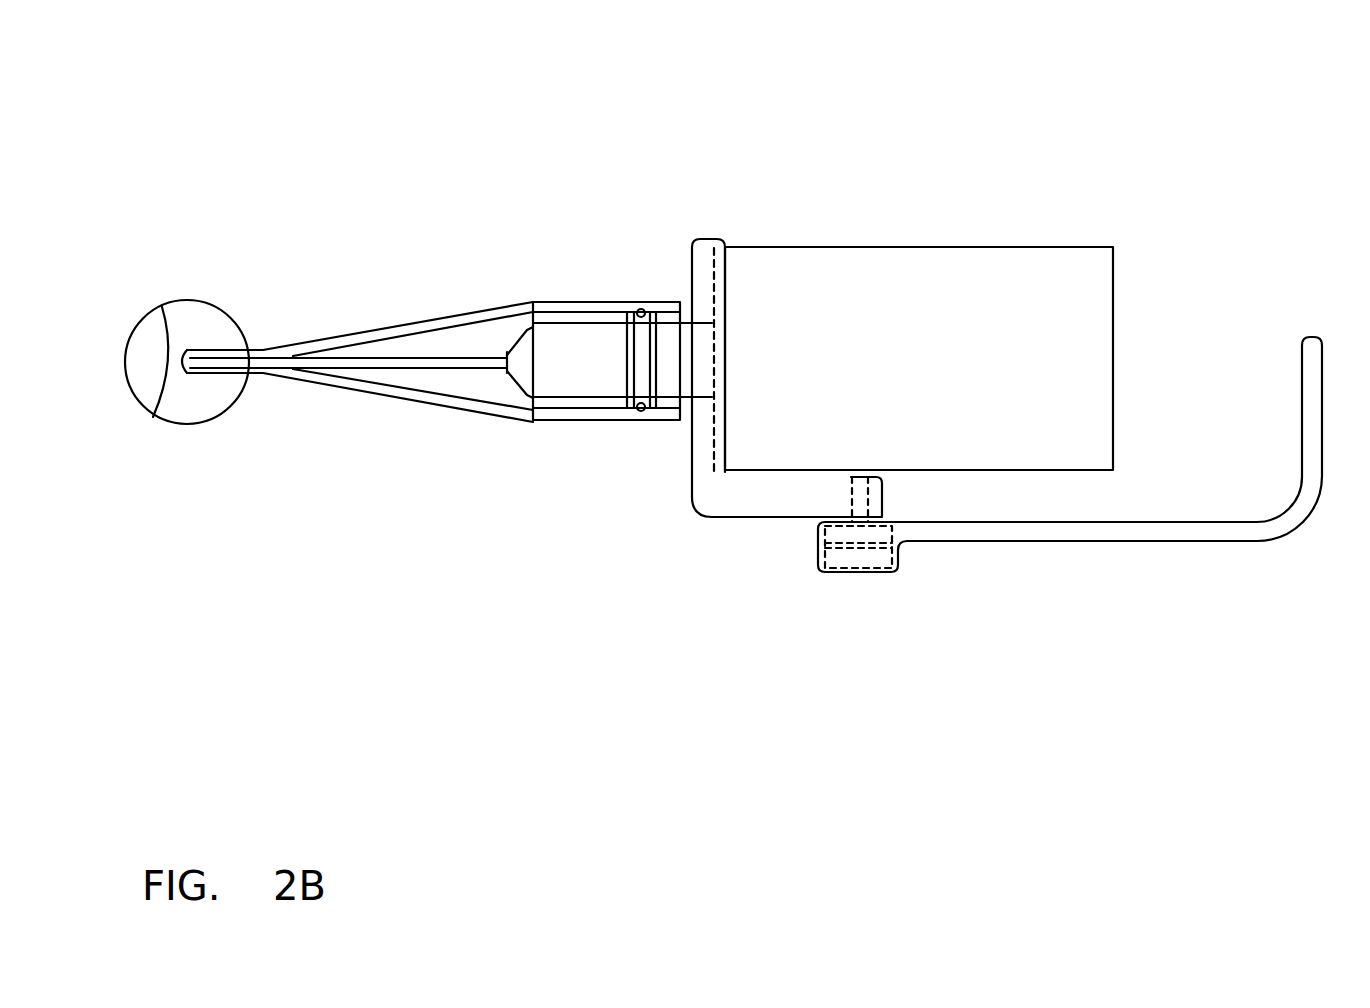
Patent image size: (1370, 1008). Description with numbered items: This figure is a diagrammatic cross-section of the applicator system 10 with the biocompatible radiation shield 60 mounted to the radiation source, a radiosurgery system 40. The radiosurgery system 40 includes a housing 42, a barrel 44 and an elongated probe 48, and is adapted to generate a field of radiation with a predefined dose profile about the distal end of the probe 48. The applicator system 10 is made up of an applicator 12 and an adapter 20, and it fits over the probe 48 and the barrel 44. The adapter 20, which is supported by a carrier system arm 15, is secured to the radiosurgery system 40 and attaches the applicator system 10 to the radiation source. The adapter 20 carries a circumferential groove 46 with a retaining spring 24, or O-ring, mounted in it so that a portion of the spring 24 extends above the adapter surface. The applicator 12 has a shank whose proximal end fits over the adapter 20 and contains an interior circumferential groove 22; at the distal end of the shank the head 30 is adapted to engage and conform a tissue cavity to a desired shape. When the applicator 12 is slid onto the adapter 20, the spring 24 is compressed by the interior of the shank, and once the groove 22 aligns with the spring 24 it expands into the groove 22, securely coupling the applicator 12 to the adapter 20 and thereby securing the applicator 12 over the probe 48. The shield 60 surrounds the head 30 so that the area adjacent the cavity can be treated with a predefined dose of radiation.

The applicator system 10 is at (467, 95).
The applicator 12 is at (392, 428).
The carrier system arm 15 is at (987, 530).
The adapter 20 is at (753, 505).
The interior circumferential groove 22 is at (641, 309).
The retaining spring 24 is at (637, 410).
The head 30 is at (197, 418).
The radiosurgery system 40 is at (1017, 155).
The housing 42 is at (1028, 278).
The barrel 44 is at (590, 342).
The circumferential groove 46 is at (620, 407).
The elongated probe 48 is at (383, 360).
The biocompatible radiation shield 60 is at (142, 337).